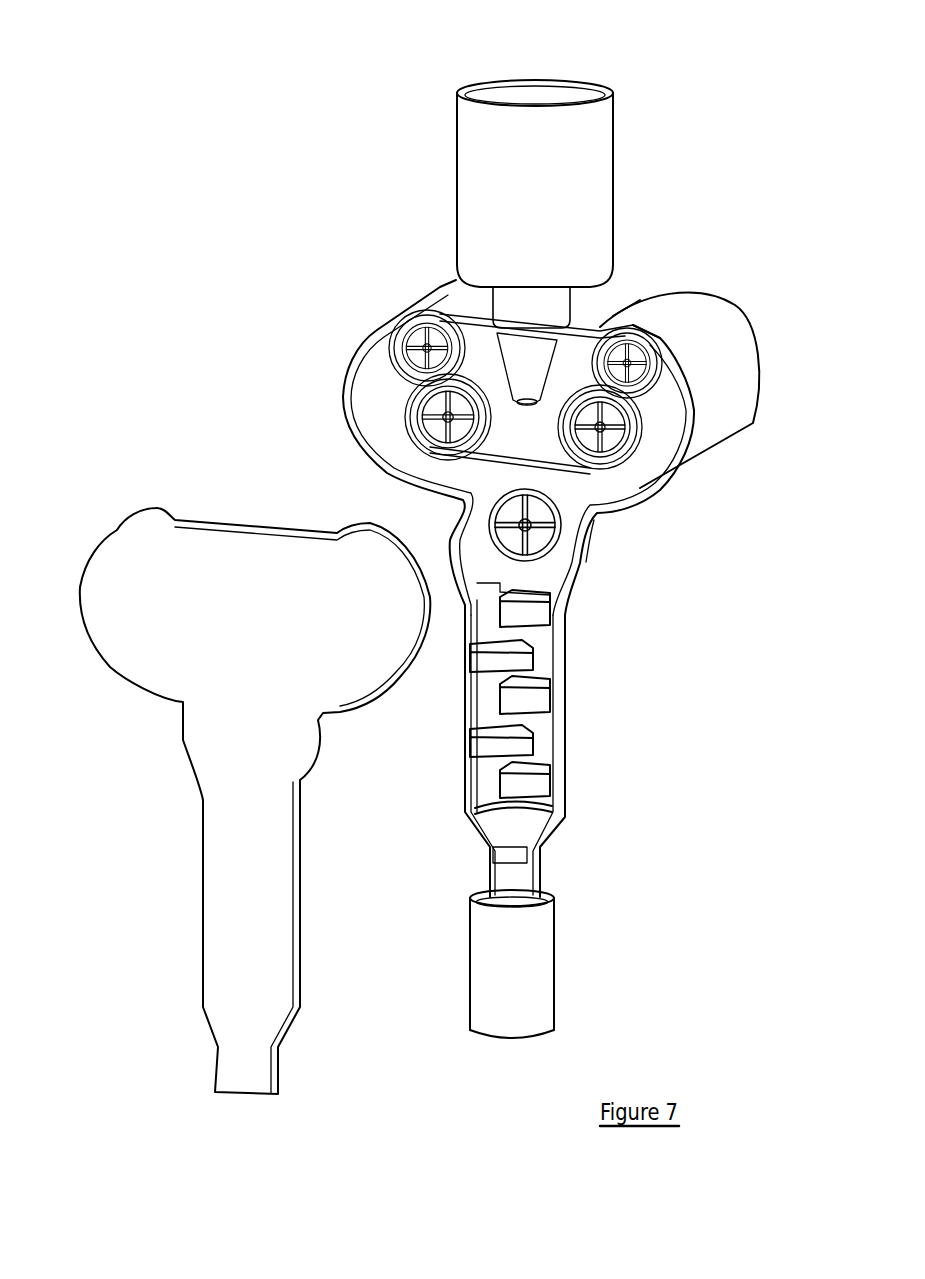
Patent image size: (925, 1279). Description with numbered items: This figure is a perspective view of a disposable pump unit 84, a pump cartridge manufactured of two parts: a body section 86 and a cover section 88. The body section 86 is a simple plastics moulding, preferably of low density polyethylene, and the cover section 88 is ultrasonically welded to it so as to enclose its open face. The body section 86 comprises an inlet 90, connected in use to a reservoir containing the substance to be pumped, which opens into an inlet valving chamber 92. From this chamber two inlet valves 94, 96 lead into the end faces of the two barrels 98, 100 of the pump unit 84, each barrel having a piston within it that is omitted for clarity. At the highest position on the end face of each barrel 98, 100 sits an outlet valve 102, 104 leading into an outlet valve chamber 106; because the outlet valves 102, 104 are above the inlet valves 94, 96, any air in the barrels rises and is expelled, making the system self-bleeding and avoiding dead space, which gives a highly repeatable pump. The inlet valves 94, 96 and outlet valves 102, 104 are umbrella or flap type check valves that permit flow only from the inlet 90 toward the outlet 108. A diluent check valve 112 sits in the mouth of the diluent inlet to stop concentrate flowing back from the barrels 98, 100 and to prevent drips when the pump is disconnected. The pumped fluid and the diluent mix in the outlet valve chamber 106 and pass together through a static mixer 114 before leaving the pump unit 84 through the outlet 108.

The disposable pump unit 84 is at (222, 170).
The body section 86 is at (622, 795).
The cover section 88 is at (116, 529).
The inlet 90 is at (535, 78).
The inlet valving chamber 92 is at (543, 438).
The inlet valve 94 is at (422, 424).
The inlet valve 96 is at (629, 433).
The barrel 98 is at (445, 288).
The barrel 100 is at (711, 302).
The outlet valve 102 is at (401, 350).
The outlet valve 104 is at (652, 380).
The outlet valve chamber 106 is at (636, 469).
The outlet 108 is at (490, 1035).
The diluent check valve 112 is at (489, 518).
The static mixer 114 is at (534, 672).